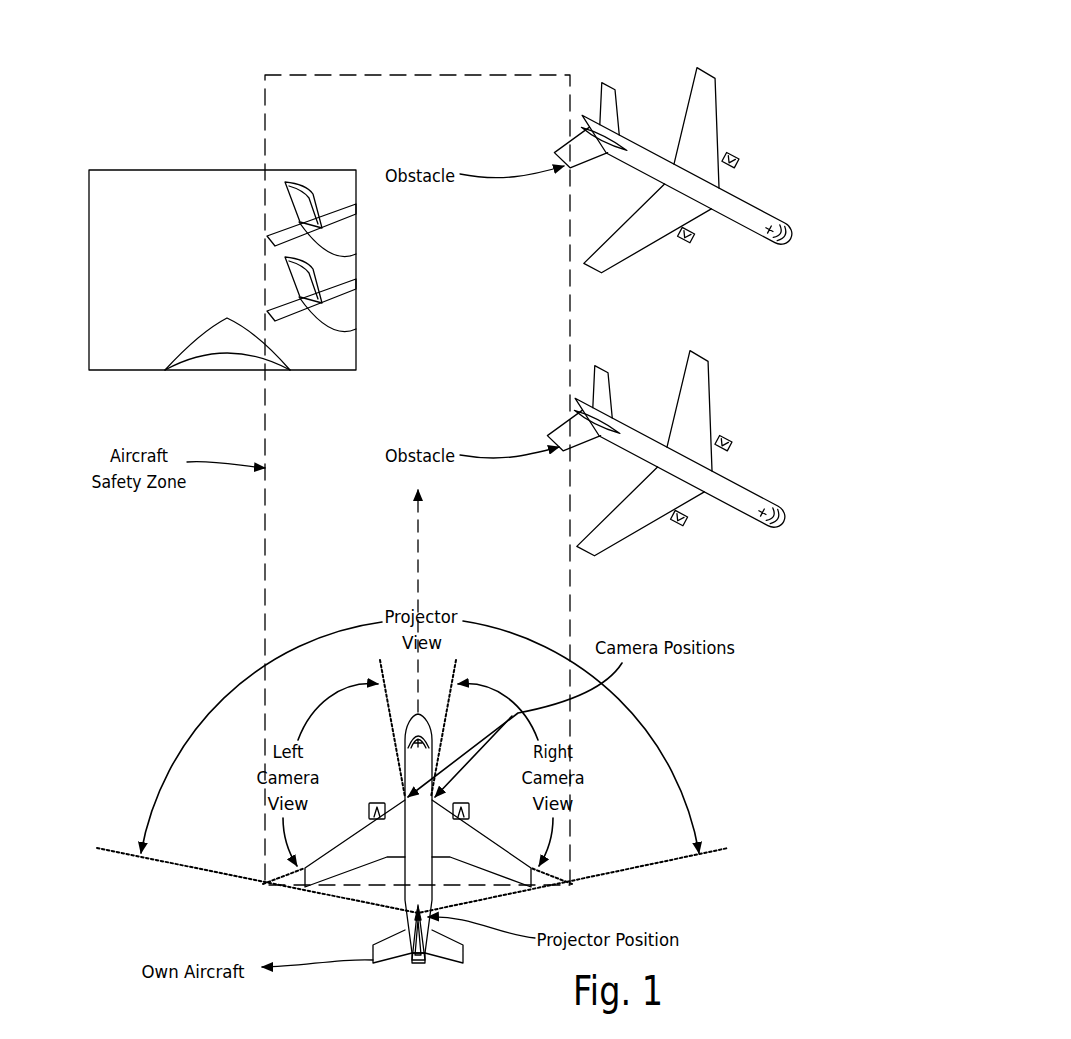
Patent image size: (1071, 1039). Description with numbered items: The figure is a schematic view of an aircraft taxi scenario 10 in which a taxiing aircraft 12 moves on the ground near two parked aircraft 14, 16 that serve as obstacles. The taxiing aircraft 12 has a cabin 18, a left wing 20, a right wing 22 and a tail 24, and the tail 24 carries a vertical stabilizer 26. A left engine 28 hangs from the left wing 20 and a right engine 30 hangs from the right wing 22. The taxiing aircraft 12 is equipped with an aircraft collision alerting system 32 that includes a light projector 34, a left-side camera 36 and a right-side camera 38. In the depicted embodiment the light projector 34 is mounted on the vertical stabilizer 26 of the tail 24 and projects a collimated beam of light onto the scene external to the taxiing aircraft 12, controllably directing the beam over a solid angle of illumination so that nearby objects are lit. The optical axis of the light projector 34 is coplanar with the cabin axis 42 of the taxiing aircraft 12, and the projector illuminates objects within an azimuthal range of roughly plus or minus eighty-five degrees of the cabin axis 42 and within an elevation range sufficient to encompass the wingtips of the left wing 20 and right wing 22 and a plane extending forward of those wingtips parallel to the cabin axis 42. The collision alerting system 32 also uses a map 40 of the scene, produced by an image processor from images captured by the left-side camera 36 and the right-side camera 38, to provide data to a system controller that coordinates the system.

The aircraft taxi scenario 10 is at (200, 81).
The taxiing aircraft 12 is at (388, 782).
The parked aircraft 14 is at (665, 420).
The parked aircraft 16 is at (666, 123).
The cabin 18 is at (409, 828).
The left wing 20 is at (361, 851).
The right wing 22 is at (448, 851).
The tail 24 is at (405, 970).
The vertical stabilizer 26 is at (427, 938).
The left engine 28 is at (378, 803).
The right engine 30 is at (463, 803).
The aircraft collision alerting system 32 is at (462, 777).
The light projector 34 is at (412, 914).
The left-side camera 36 is at (402, 788).
The right-side camera 38 is at (447, 762).
The map 40 is at (157, 170).
The cabin axis 42 is at (403, 528).